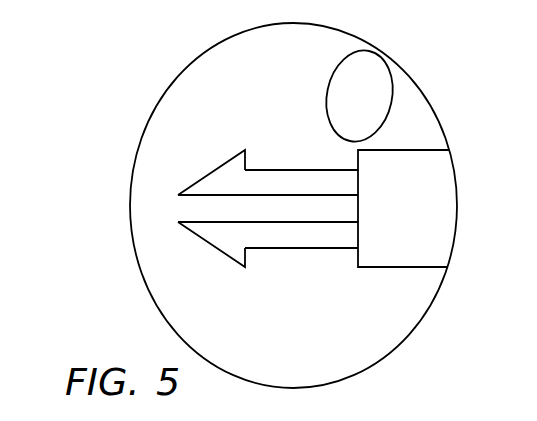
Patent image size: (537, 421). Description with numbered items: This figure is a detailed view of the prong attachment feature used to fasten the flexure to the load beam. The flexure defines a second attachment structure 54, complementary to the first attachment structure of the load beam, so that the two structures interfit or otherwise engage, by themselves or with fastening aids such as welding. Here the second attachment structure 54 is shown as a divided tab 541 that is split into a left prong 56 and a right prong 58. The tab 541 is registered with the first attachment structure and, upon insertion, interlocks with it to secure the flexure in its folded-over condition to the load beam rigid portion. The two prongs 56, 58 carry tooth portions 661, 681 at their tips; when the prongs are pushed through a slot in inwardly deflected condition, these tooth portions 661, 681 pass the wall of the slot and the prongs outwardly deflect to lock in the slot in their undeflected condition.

The second attachment structure 54 is at (359, 96).
The left prong 56 is at (285, 170).
The right prong 58 is at (287, 249).
The divided tab 541 is at (435, 178).
The tooth portion 661 is at (212, 172).
The tooth portion 681 is at (212, 247).